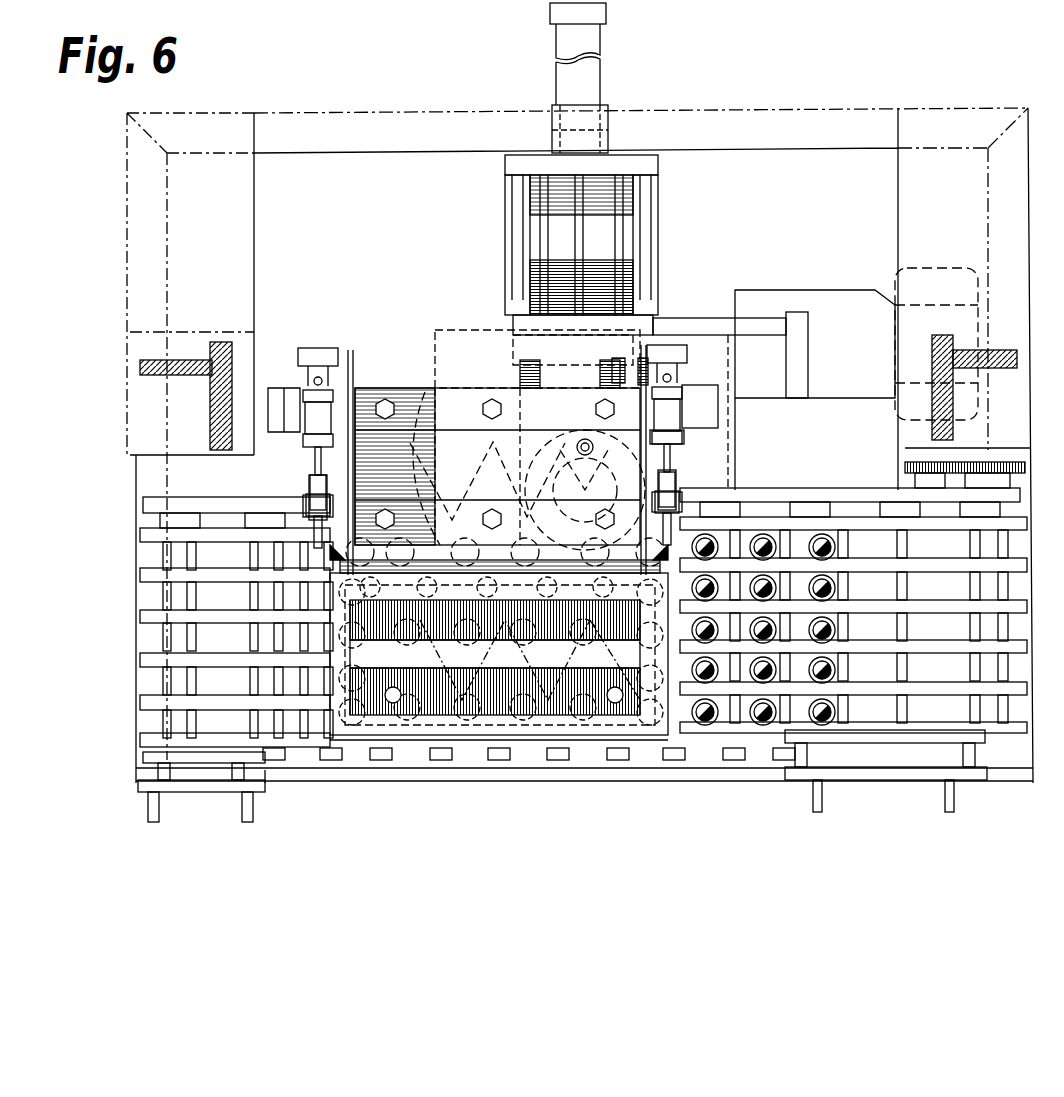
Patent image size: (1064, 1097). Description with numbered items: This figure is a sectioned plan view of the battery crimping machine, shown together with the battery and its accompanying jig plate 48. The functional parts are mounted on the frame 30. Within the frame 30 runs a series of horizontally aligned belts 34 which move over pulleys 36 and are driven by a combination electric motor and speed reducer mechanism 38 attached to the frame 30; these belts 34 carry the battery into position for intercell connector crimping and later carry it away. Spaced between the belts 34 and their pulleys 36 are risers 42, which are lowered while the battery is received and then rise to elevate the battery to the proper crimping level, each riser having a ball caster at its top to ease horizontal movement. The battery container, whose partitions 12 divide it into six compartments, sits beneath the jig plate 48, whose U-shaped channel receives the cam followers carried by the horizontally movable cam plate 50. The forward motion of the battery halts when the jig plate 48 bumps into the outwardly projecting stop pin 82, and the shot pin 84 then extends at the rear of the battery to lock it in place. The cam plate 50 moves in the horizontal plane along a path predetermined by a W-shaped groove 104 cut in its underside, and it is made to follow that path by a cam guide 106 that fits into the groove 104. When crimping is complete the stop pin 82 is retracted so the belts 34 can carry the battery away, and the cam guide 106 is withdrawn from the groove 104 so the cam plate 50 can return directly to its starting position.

The frame 30 is at (790, 112).
The combination electric motor and speed reducer mechanism 38 is at (835, 300).
The cam guide 106 is at (678, 452).
The stop pin 82 is at (675, 550).
The shot pin 84 is at (318, 562).
The cam plate 50 is at (405, 392).
The groove 104 is at (458, 405).
The belts 34 is at (152, 617).
The pulleys 36 is at (153, 668).
The risers 42 is at (763, 715).
The jig plate 48 is at (655, 723).
The partitions 12 is at (452, 702).